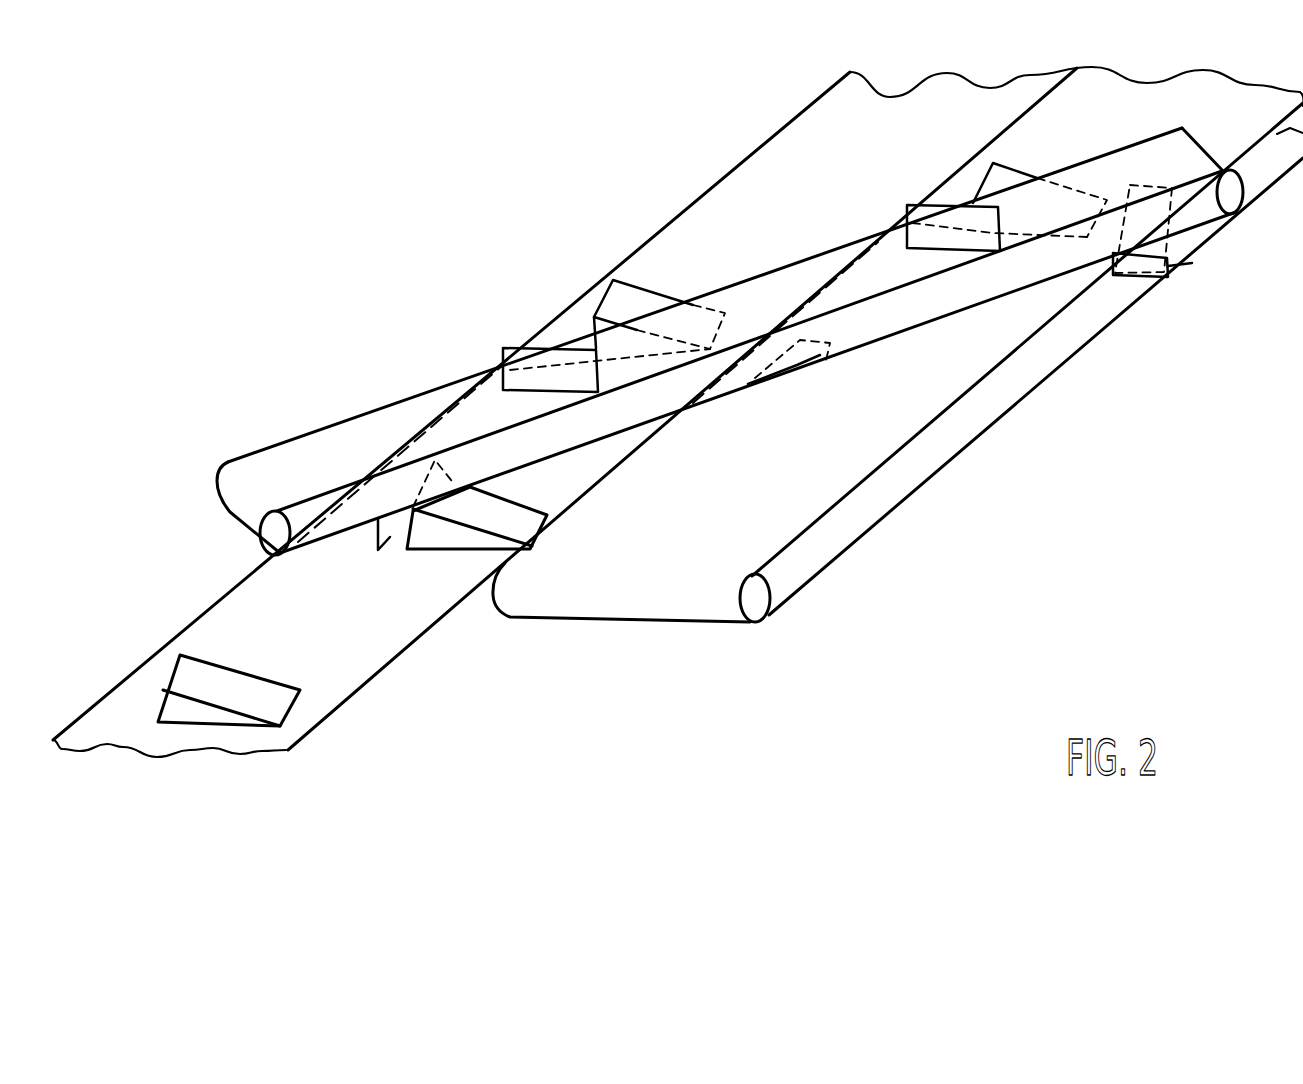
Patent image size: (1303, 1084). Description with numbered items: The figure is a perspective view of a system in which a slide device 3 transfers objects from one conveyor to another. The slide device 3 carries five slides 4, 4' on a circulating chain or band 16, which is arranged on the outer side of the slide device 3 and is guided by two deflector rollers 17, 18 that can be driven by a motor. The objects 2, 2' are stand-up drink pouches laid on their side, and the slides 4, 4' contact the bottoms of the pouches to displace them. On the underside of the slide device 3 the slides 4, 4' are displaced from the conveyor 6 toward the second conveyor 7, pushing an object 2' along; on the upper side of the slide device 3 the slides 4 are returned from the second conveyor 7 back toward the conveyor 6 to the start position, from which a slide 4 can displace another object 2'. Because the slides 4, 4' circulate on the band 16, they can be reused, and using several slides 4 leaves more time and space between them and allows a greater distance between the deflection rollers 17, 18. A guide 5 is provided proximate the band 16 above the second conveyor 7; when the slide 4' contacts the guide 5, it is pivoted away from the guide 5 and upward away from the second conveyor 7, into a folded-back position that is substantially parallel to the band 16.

The object 2 is at (229, 740).
The object 2' is at (477, 587).
The slide device 3 is at (729, 346).
The slide 4 is at (786, 436).
The slide 4' is at (852, 446).
The guide 5 is at (898, 377).
The conveyor 6 is at (340, 728).
The second conveyor 7 is at (797, 590).
The circulating chain or band 16 is at (405, 408).
The deflector roller 17 is at (268, 533).
The deflector roller 18 is at (1233, 200).